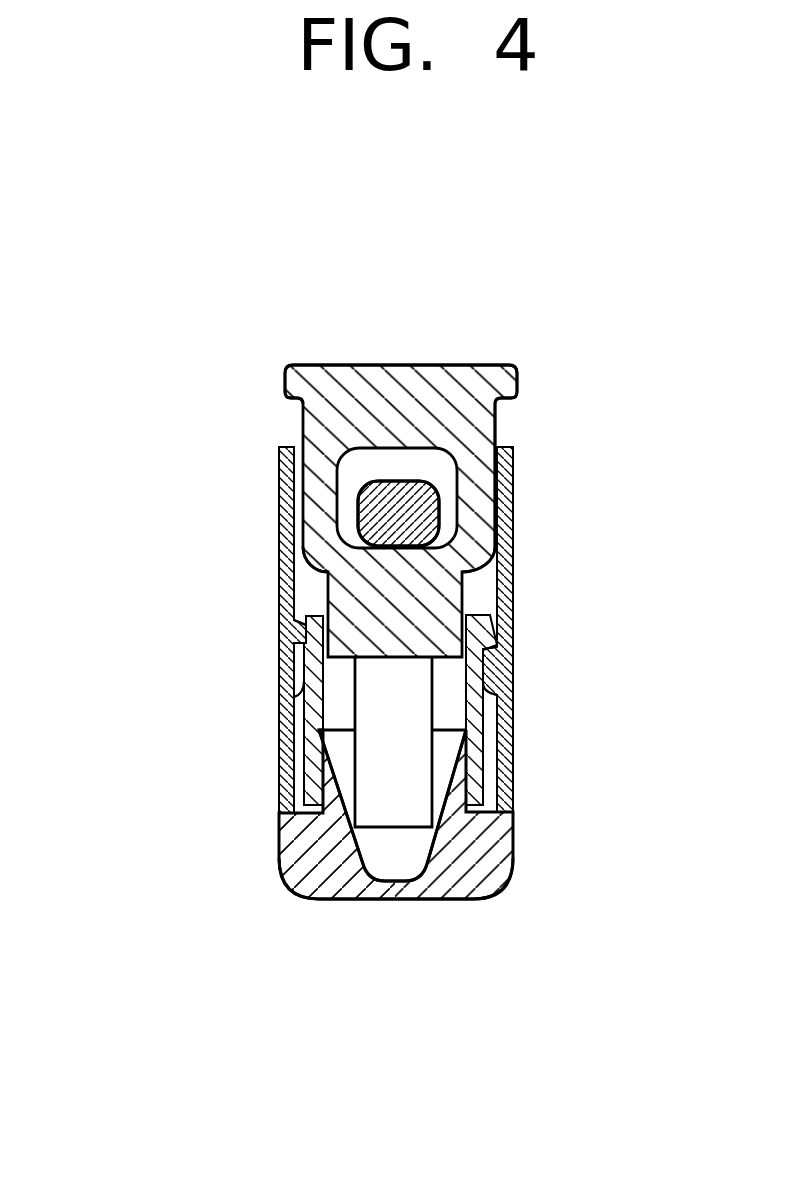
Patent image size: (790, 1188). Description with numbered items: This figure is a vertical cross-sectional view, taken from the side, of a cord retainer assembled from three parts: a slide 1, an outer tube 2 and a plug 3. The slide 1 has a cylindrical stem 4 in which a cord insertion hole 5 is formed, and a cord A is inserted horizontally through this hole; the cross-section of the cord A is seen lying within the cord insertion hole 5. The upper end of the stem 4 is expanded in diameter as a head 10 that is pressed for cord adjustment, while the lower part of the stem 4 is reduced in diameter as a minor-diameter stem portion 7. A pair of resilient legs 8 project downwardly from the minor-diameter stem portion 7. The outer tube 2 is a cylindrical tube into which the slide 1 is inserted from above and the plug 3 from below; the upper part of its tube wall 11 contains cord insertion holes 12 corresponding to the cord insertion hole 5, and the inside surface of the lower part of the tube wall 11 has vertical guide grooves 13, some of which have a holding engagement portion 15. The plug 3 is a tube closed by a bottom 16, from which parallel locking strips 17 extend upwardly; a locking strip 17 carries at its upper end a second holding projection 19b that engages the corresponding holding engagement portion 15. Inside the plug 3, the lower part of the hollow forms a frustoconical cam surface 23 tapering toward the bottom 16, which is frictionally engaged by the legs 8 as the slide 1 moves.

The slide 1 is at (405, 425).
The outer tube 2 is at (341, 664).
The plug 3 is at (335, 873).
The cylindrical stem 4 is at (470, 514).
The cord insertion hole 5 is at (405, 465).
The minor-diameter stem portion 7 is at (470, 577).
The resilient legs 8 is at (395, 782).
The head 10 is at (457, 363).
The tube wall 11 is at (290, 467).
The cord insertion holes 12 is at (443, 488).
The guide grooves 13 is at (394, 710).
The holding engagement portion 15 is at (391, 561).
The bottom 16 is at (393, 887).
The locking strips 17 is at (300, 708).
The second holding projection 19b is at (500, 631).
The frustoconical cam surface 23 is at (348, 848).
The cord A is at (382, 522).